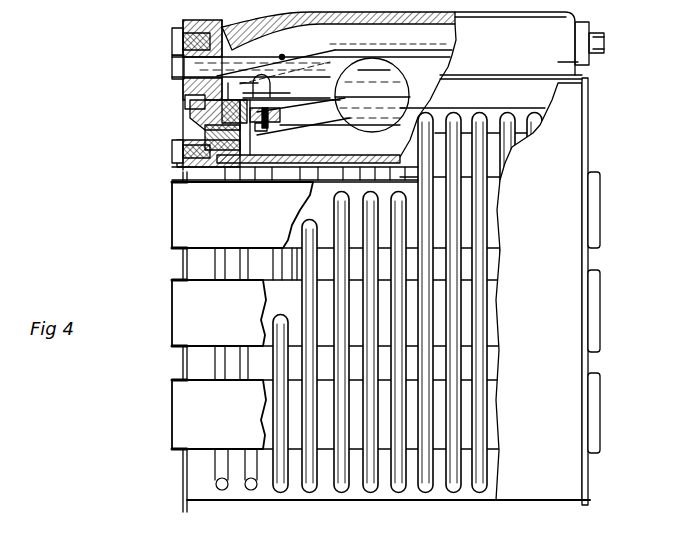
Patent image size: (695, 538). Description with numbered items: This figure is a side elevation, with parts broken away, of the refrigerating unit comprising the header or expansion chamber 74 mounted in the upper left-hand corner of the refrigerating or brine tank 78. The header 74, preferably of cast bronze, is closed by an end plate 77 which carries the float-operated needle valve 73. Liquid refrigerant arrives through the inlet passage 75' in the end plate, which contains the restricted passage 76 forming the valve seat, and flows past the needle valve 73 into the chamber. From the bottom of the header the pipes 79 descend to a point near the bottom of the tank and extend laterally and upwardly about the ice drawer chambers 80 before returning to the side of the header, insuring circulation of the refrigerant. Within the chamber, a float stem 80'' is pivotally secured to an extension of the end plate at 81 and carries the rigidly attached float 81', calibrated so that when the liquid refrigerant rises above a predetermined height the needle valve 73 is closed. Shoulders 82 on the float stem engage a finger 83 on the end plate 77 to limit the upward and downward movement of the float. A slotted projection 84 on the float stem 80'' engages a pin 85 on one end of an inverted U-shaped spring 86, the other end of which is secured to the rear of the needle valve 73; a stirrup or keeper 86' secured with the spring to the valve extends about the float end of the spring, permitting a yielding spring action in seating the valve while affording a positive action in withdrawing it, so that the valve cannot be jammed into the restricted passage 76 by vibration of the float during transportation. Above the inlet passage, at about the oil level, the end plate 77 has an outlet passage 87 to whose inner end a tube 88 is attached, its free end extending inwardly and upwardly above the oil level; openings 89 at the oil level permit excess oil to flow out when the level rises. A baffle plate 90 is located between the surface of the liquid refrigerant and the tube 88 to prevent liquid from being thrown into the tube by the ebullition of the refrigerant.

The needle valve 73 is at (173, 143).
The header or expansion chamber 74 is at (558, 62).
The inlet passage 75' is at (176, 115).
The restricted passage 76 is at (180, 132).
The end plate 77 is at (172, 50).
The refrigerating or brine tank 78 is at (555, 163).
The pipes 79 is at (307, 285).
The ice drawer chambers 80 is at (215, 315).
The float stem 80'' is at (301, 127).
The pivot 81 is at (269, 133).
The float 81' is at (386, 49).
The shoulders 82 is at (263, 133).
The finger 83 is at (257, 128).
The slotted projection 84 is at (273, 115).
The pin 85 is at (282, 100).
The inverted U-shaped spring 86 is at (182, 93).
The stirrup or keeper 86' is at (277, 87).
The outlet passage 87 is at (172, 72).
The tube 88 is at (300, 53).
The openings 89 is at (282, 55).
The baffle plate 90 is at (335, 55).